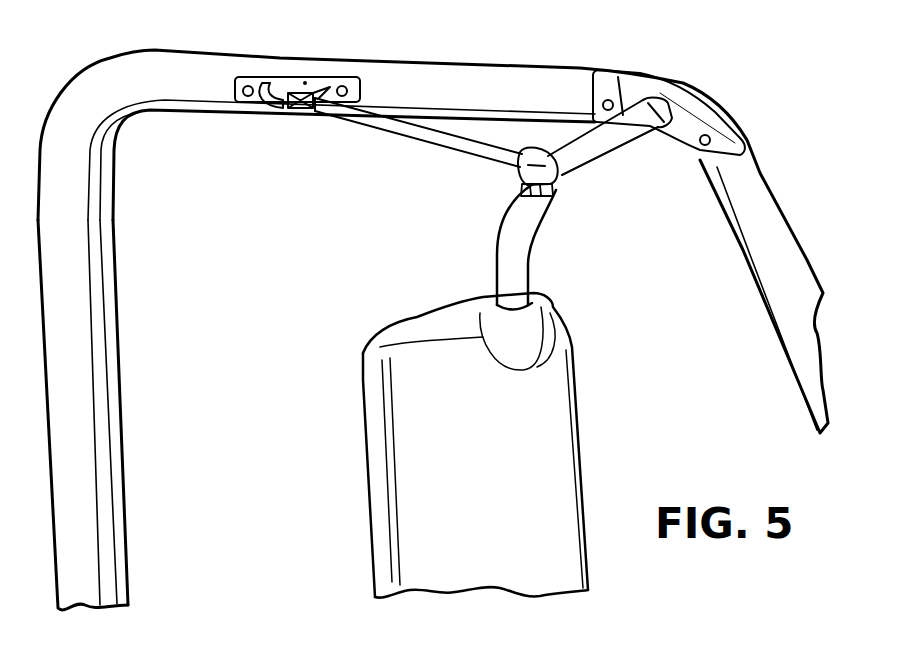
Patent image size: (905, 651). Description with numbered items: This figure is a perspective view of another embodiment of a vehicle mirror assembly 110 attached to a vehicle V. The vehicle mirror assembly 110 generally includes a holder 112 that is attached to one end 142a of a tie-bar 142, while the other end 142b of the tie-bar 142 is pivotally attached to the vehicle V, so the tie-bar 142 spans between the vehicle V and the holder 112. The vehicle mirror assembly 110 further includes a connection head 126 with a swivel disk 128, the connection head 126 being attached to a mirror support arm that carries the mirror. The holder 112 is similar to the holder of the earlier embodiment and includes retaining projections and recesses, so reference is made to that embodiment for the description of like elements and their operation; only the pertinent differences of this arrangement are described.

The vehicle V is at (395, 77).
The vehicle mirror assembly 110 is at (488, 205).
The holder 112 is at (513, 163).
The connection head 126 is at (541, 190).
The swivel disk 128 is at (545, 192).
The tie-bar 142 is at (420, 128).
The one end of tie-bar 142a is at (522, 156).
The other end of tie-bar 142b is at (303, 105).